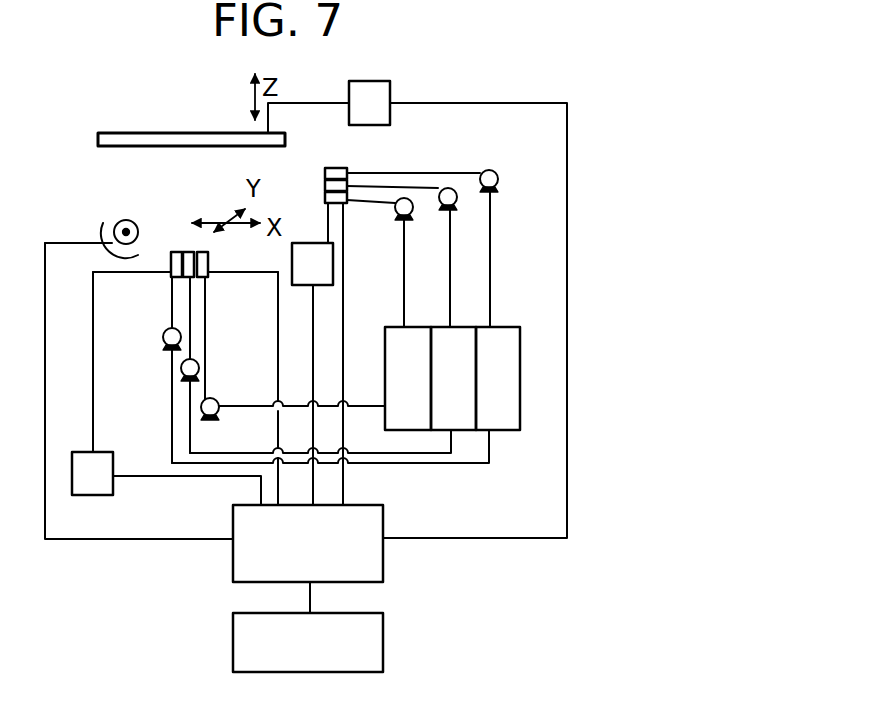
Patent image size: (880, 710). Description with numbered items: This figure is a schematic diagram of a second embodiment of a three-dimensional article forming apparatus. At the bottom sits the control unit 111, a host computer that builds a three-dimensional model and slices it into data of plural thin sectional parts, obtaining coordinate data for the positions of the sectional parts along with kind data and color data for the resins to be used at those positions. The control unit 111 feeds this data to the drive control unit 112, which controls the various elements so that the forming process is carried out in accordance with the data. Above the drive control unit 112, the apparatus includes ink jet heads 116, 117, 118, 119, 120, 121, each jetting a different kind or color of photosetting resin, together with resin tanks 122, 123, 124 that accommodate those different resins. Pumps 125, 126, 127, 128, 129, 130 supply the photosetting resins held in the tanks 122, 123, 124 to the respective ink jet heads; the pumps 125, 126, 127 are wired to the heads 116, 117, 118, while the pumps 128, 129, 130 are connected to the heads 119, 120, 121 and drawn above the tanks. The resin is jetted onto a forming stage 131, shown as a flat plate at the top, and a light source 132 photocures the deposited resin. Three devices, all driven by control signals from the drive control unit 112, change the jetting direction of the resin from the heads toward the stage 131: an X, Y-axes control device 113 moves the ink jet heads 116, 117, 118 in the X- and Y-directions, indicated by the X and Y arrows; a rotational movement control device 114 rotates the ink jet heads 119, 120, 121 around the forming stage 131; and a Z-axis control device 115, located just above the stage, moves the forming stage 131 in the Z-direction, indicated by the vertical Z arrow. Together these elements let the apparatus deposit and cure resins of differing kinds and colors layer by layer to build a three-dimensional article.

The control unit 111 is at (383, 630).
The drive control unit 112 is at (383, 527).
The X, Y-axes control device 113 is at (105, 495).
The rotational movement control device 114 is at (312, 243).
The Z-axis control device 115 is at (367, 81).
The ink jet head 116 is at (171, 277).
The ink jet head 117 is at (188, 252).
The ink jet head 118 is at (208, 265).
The ink jet head 119 is at (340, 203).
The ink jet head 120 is at (325, 183).
The ink jet head 121 is at (358, 154).
The resin tank 122 is at (385, 340).
The resin tank 123 is at (445, 333).
The resin tank 124 is at (505, 334).
The pump 125 is at (162, 337).
The pump 126 is at (180, 368).
The pump 127 is at (240, 395).
The pump 128 is at (400, 218).
The pump 129 is at (458, 206).
The pump 130 is at (498, 181).
The forming stage 131 is at (203, 133).
The light source 132 is at (124, 222).